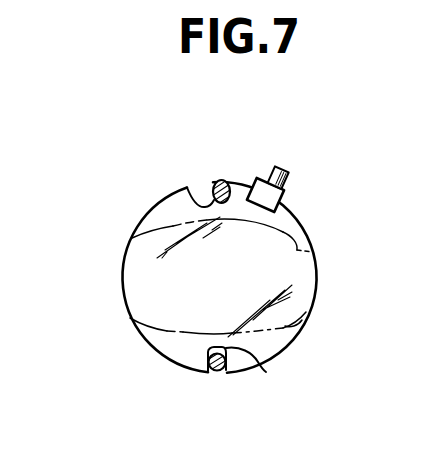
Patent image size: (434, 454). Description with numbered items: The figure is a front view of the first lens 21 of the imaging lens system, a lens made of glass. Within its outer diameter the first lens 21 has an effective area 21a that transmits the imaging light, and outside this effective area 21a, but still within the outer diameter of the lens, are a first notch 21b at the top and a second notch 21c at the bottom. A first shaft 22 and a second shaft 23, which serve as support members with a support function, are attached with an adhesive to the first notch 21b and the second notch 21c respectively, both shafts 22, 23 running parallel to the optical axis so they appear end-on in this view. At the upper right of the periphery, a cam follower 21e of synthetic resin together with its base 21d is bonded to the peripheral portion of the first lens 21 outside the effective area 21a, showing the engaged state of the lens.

The first lens 21 is at (150, 277).
The effective area 21a is at (312, 247).
The first notch 21b is at (190, 190).
The second notch 21c is at (260, 368).
The base 21d is at (285, 191).
The cam follower 21e is at (286, 178).
The first shaft 22 is at (222, 180).
The second shaft 23 is at (220, 373).